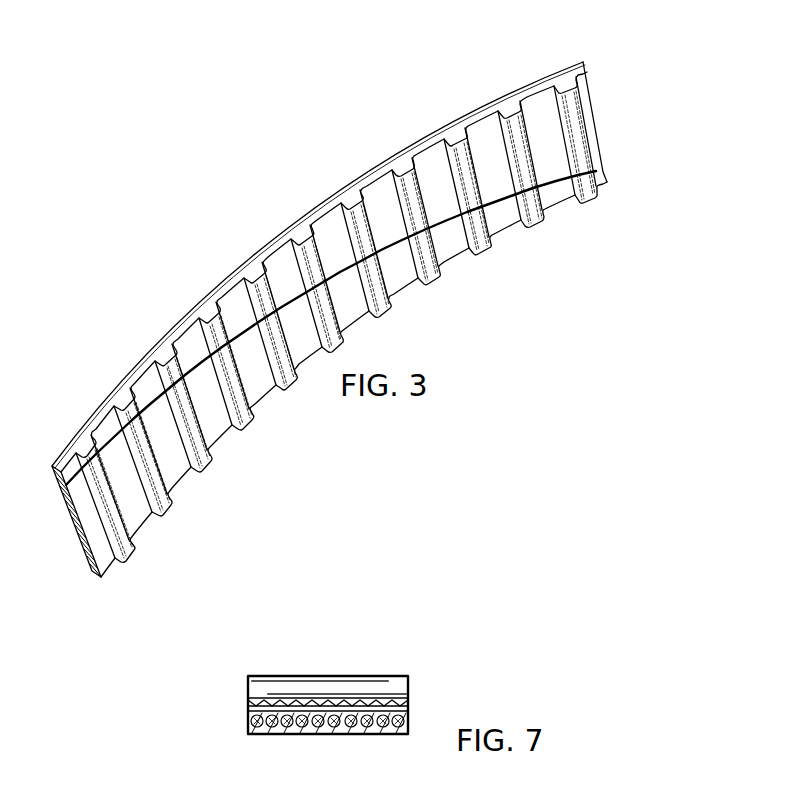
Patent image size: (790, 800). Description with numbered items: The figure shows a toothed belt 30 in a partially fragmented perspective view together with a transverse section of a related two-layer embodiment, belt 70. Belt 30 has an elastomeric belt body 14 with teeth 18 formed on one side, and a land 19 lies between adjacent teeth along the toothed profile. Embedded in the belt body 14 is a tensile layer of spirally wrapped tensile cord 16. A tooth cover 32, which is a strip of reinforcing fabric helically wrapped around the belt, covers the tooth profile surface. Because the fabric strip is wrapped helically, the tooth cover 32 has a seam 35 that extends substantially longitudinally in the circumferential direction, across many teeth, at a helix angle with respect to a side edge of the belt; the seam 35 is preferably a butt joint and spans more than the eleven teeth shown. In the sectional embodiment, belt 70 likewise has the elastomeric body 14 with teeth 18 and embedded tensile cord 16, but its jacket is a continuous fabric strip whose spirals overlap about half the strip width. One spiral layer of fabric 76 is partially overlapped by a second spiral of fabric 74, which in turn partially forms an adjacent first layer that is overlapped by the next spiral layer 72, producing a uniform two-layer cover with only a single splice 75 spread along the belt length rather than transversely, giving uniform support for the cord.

In FIG. 3, the elastomeric belt body 14 is at (202, 297).
In FIG. 7, the elastomeric belt body 14 is at (361, 732).
In FIG. 3, the tensile cord 16 is at (138, 368).
In FIG. 7, the tensile cord 16 is at (408, 734).
In FIG. 3, the teeth 18 is at (267, 262).
In FIG. 7, the teeth 18 is at (395, 680).
In FIG. 3, the land 19 is at (325, 214).
In FIG. 3, the belt 30 is at (560, 60).
In FIG. 3, the tooth cover 32 is at (594, 118).
In FIG. 3, the seam 35 is at (388, 248).
In FIG. 7, the belt 70 is at (397, 633).
In FIG. 7, the next spiral layer of fabric 72 is at (347, 702).
In FIG. 7, the second spiral of fabric 74 is at (277, 700).
In FIG. 7, the splice 75 is at (312, 705).
In FIG. 7, the spiral layer of fabric 76 is at (248, 708).